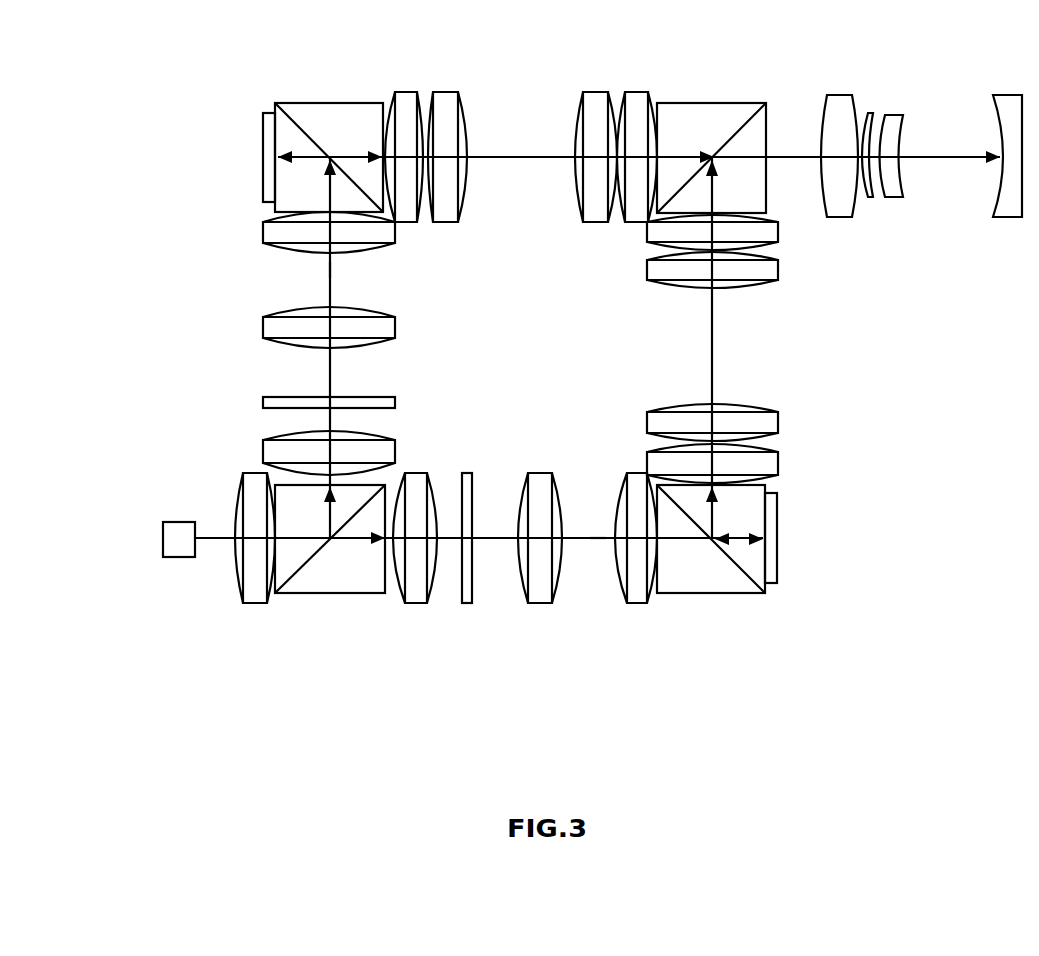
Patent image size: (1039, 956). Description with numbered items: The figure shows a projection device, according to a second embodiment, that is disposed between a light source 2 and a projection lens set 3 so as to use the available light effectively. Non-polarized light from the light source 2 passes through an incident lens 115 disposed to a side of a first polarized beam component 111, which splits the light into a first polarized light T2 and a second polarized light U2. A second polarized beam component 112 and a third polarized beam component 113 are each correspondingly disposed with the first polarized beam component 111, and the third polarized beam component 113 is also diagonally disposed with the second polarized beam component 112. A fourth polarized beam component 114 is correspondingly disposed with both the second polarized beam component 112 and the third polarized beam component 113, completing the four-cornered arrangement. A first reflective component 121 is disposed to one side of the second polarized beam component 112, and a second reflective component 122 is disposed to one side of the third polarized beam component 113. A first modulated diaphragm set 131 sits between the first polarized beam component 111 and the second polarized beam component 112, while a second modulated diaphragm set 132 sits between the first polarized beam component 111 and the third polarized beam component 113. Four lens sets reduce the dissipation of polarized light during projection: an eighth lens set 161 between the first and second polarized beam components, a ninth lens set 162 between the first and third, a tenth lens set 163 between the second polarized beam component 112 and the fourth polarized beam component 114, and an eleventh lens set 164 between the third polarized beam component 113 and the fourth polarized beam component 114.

The light source 2 is at (168, 538).
The projection lens set 3 is at (1020, 218).
The first polarized beam component 111 is at (332, 563).
The second polarized beam component 112 is at (730, 580).
The third polarized beam component 113 is at (322, 117).
The fourth polarized beam component 114 is at (718, 115).
The incident lens 115 is at (260, 590).
The first reflective component 121 is at (772, 533).
The second reflective component 122 is at (270, 142).
The first modulated diaphragm set 131 is at (465, 582).
The second modulated diaphragm set 132 is at (298, 402).
The eighth lens set 161 is at (645, 610).
The ninth lens set 162 is at (253, 218).
The tenth lens set 163 is at (785, 222).
The eleventh lens set 164 is at (645, 82).
The first polarized light T2 is at (598, 535).
The second polarized light U2 is at (332, 270).